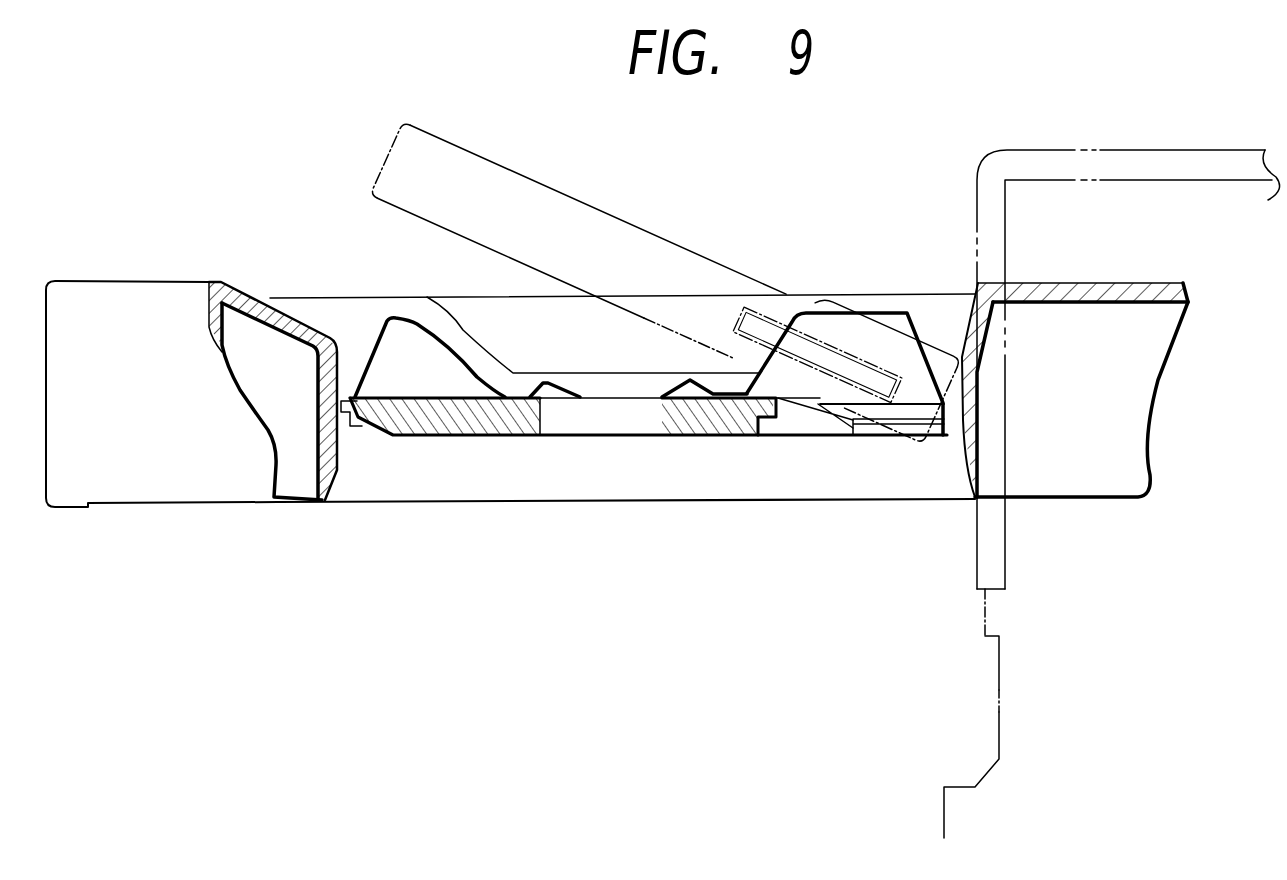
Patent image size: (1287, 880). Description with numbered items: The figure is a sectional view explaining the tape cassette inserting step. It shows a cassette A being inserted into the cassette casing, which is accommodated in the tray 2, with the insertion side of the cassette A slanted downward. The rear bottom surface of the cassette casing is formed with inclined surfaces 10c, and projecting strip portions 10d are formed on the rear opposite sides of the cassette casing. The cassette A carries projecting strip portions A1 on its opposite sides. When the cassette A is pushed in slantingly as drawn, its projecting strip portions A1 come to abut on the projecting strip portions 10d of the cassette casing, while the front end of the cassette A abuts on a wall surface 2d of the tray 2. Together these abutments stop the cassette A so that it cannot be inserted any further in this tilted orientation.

The tray 2 is at (1106, 283).
The wall surface 2d is at (977, 402).
The inclined surfaces 10c is at (803, 406).
The projecting strip portions 10d is at (907, 436).
The cassette A is at (546, 222).
The projecting strip portions A1 is at (827, 360).